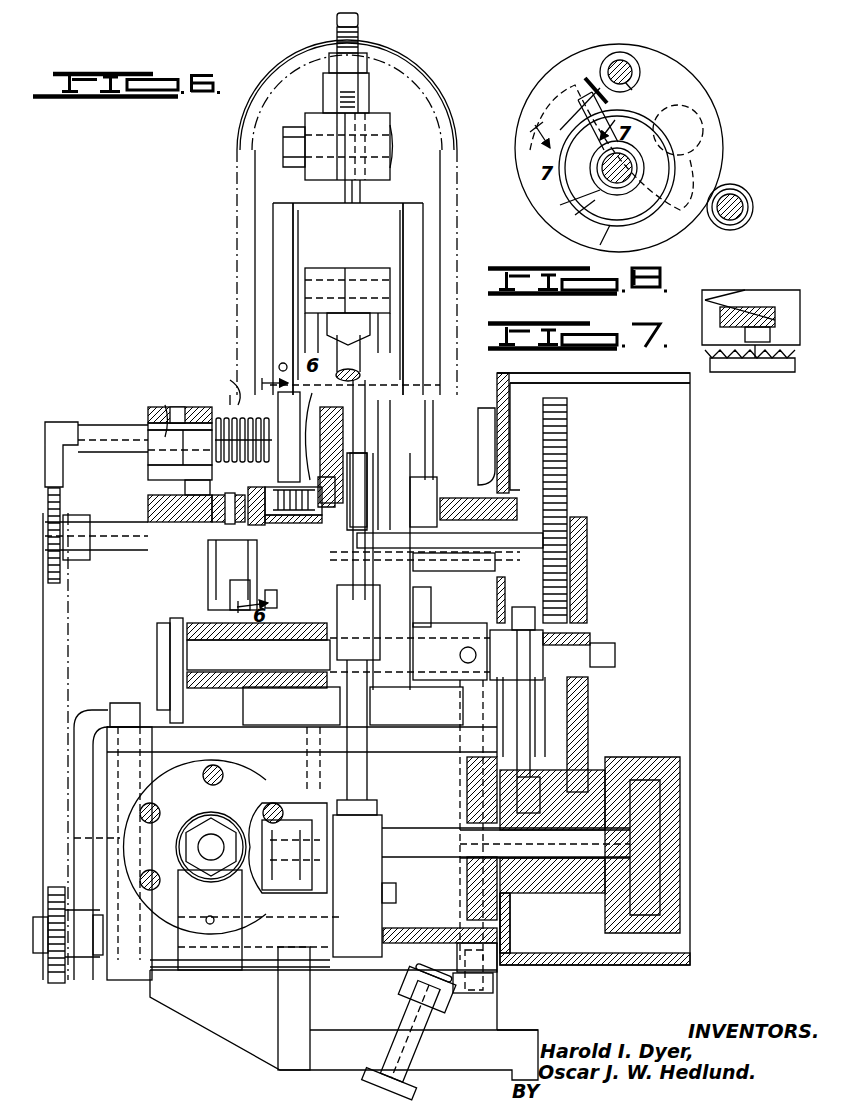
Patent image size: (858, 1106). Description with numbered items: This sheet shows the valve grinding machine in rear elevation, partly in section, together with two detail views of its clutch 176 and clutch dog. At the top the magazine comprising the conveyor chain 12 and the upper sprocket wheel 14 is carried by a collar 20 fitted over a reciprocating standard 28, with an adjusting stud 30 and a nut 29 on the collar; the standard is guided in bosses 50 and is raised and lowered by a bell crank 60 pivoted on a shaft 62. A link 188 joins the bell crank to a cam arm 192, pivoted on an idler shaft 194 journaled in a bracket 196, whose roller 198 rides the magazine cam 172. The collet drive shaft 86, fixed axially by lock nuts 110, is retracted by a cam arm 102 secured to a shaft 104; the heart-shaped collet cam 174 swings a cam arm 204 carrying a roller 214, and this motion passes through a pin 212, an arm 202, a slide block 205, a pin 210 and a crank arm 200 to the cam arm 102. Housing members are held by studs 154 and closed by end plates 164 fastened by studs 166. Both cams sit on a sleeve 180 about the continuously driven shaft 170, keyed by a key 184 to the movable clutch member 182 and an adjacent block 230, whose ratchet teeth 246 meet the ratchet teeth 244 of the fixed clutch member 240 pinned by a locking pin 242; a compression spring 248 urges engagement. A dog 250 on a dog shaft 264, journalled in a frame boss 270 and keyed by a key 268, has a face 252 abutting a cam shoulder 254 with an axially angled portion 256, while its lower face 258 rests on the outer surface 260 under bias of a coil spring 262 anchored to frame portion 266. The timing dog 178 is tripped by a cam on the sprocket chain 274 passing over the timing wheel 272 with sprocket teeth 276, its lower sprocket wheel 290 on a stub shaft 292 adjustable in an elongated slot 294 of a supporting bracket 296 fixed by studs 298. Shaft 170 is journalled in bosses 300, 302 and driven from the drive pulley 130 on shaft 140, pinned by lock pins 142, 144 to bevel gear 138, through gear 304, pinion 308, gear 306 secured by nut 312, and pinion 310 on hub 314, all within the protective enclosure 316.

In FIG. 5, the conveyor chain 12 is at (418, 68).
In FIG. 5, the upper sprocket wheel 14 is at (400, 98).
In FIG. 5, the collar 20 is at (392, 128).
In FIG. 5, the reciprocating rod or standard 28 is at (370, 198).
In FIG. 5, the lock nut 29 is at (283, 145).
In FIG. 5, the adjusting stud 30 is at (362, 46).
In FIG. 5, the bosses 50 is at (348, 299).
In FIG. 5, the bell crank 60 is at (378, 275).
In FIG. 5, the shaft 62 is at (425, 375).
In FIG. 5, the drive shaft 86 is at (156, 890).
In FIG. 5, the cam arm 102 is at (212, 850).
In FIG. 5, the shaft 104 is at (203, 928).
In FIG. 5, the lock nuts 110 is at (211, 807).
In FIG. 5, the drive pulley 130 is at (620, 757).
In FIG. 5, the bevel gear 138 is at (270, 815).
In FIG. 5, the shaft 140 is at (387, 830).
In FIG. 5, the lock pin 142 is at (295, 800).
In FIG. 5, the lock pin 144 is at (625, 818).
In FIG. 5, the studs 154 is at (150, 732).
In FIG. 5, the end plates 164 is at (150, 985).
In FIG. 5, the studs 166 is at (203, 778).
In FIG. 5, the main drive shaft 170 is at (135, 555).
In FIG. 6, the main drive shaft 170 is at (640, 225).
In FIG. 5, the magazine cam 172 is at (365, 420).
In FIG. 6, the magazine cam 172 is at (715, 135).
In FIG. 5, the collet cam 174 is at (380, 450).
In FIG. 6, the collet cam 174 is at (700, 168).
In FIG. 5, the clutch 176 is at (244, 608).
In FIG. 5, the timing dog 178 is at (40, 430).
In FIG. 5, the sleeve 180 is at (365, 480).
In FIG. 6, the sleeve 180 is at (605, 195).
In FIG. 5, the movable clutch member 182 is at (328, 431).
In FIG. 6, the movable clutch member 182 is at (605, 230).
In FIG. 6, the key 184 is at (600, 195).
In FIG. 5, the link 188 is at (360, 358).
In FIG. 5, the cam arm 192 is at (269, 575).
In FIG. 5, the idler shaft 194 is at (258, 655).
In FIG. 5, the bracket 196 is at (268, 692).
In FIG. 5, the roller 198 is at (370, 565).
In FIG. 6, the roller 198 is at (735, 185).
In FIG. 5, the crank arm 200 is at (385, 938).
In FIG. 5, the arm 202 is at (370, 715).
In FIG. 5, the cam arm 204 is at (386, 490).
In FIG. 5, the slide block 205 is at (384, 848).
In FIG. 5, the pin 210 is at (396, 892).
In FIG. 5, the pin 212 is at (431, 598).
In FIG. 5, the roller 214 is at (437, 495).
In FIG. 6, the roller 214 is at (700, 110).
In FIG. 5, the block 230 is at (320, 447).
In FIG. 5, the fixed clutch member 240 is at (225, 585).
In FIG. 7, the fixed clutch member 240 is at (755, 372).
In FIG. 5, the locking pin 242 is at (204, 517).
In FIG. 5, the ratchet teeth 244 is at (238, 505).
In FIG. 7, the ratchet teeth 244 is at (722, 372).
In FIG. 5, the ratchet teeth 246 is at (291, 514).
In FIG. 7, the ratchet teeth 246 is at (752, 358).
In FIG. 5, the compression spring 248 is at (380, 550).
In FIG. 5, the dog 250 is at (279, 485).
In FIG. 6, the dog 250 is at (560, 80).
In FIG. 7, the dog 250 is at (720, 315).
In FIG. 7, the face 252 is at (740, 290).
In FIG. 5, the cam shoulder 254 is at (270, 440).
In FIG. 7, the cam shoulder 254 is at (762, 310).
In FIG. 7, the axially angled portion 256 is at (728, 298).
In FIG. 6, the lower face 258 is at (580, 100).
In FIG. 6, the outer surface 260 is at (590, 205).
In FIG. 5, the coil spring 262 is at (195, 408).
In FIG. 6, the coil spring 262 is at (590, 90).
In FIG. 5, the dog shaft 264 is at (112, 425).
In FIG. 6, the dog shaft 264 is at (632, 72).
In FIG. 5, the machine frame portion 266 is at (165, 485).
In FIG. 6, the key 268 is at (640, 85).
In FIG. 5, the frame boss 270 is at (194, 379).
In FIG. 5, the timing wheel 272 is at (150, 505).
In FIG. 5, the sprocket chain 274 is at (157, 660).
In FIG. 5, the sprocket teeth 276 is at (60, 590).
In FIG. 5, the lower sprocket wheel 290 is at (55, 985).
In FIG. 5, the stub shaft 292 is at (130, 980).
In FIG. 5, the elongated slot 294 is at (194, 847).
In FIG. 5, the supporting bracket 296 is at (88, 712).
In FIG. 5, the studs 298 is at (160, 640).
In FIG. 5, the boss 300 is at (150, 535).
In FIG. 5, the boss 302 is at (540, 495).
In FIG. 5, the gear 304 is at (580, 500).
In FIG. 5, the gear 306 is at (590, 590).
In FIG. 5, the pinion 308 is at (570, 700).
In FIG. 5, the pinion 310 is at (565, 935).
In FIG. 5, the nut 312 is at (600, 620).
In FIG. 5, the hub 314 is at (535, 905).
In FIG. 5, the protective enclosure 316 is at (578, 385).